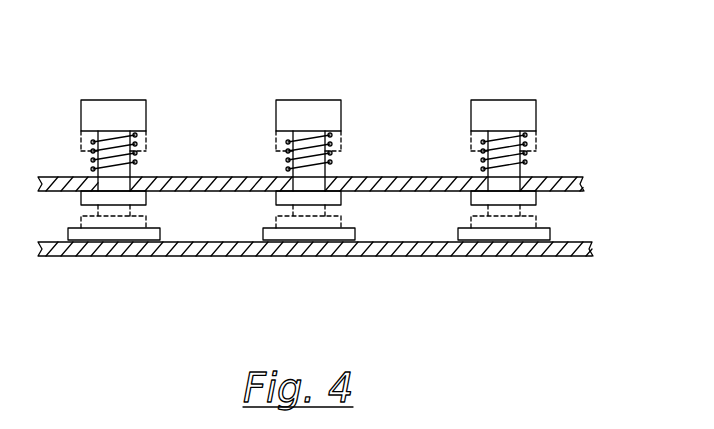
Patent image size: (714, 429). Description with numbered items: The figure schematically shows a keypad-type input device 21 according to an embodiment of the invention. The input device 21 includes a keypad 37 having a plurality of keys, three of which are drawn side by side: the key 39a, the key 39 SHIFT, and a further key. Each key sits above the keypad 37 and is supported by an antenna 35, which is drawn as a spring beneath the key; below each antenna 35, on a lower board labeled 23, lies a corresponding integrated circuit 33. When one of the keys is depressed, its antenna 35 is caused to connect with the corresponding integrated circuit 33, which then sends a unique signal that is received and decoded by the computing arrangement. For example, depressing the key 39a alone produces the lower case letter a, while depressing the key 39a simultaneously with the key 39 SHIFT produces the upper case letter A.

The input device 21 is at (537, 83).
The printed circuit board 23 is at (315, 281).
The integrated circuit 33 is at (542, 278).
The antenna 35 is at (508, 176).
The keypad 37 is at (575, 178).
The key 'a' 39a is at (113, 109).
The shift key 39 SHIFT is at (306, 115).